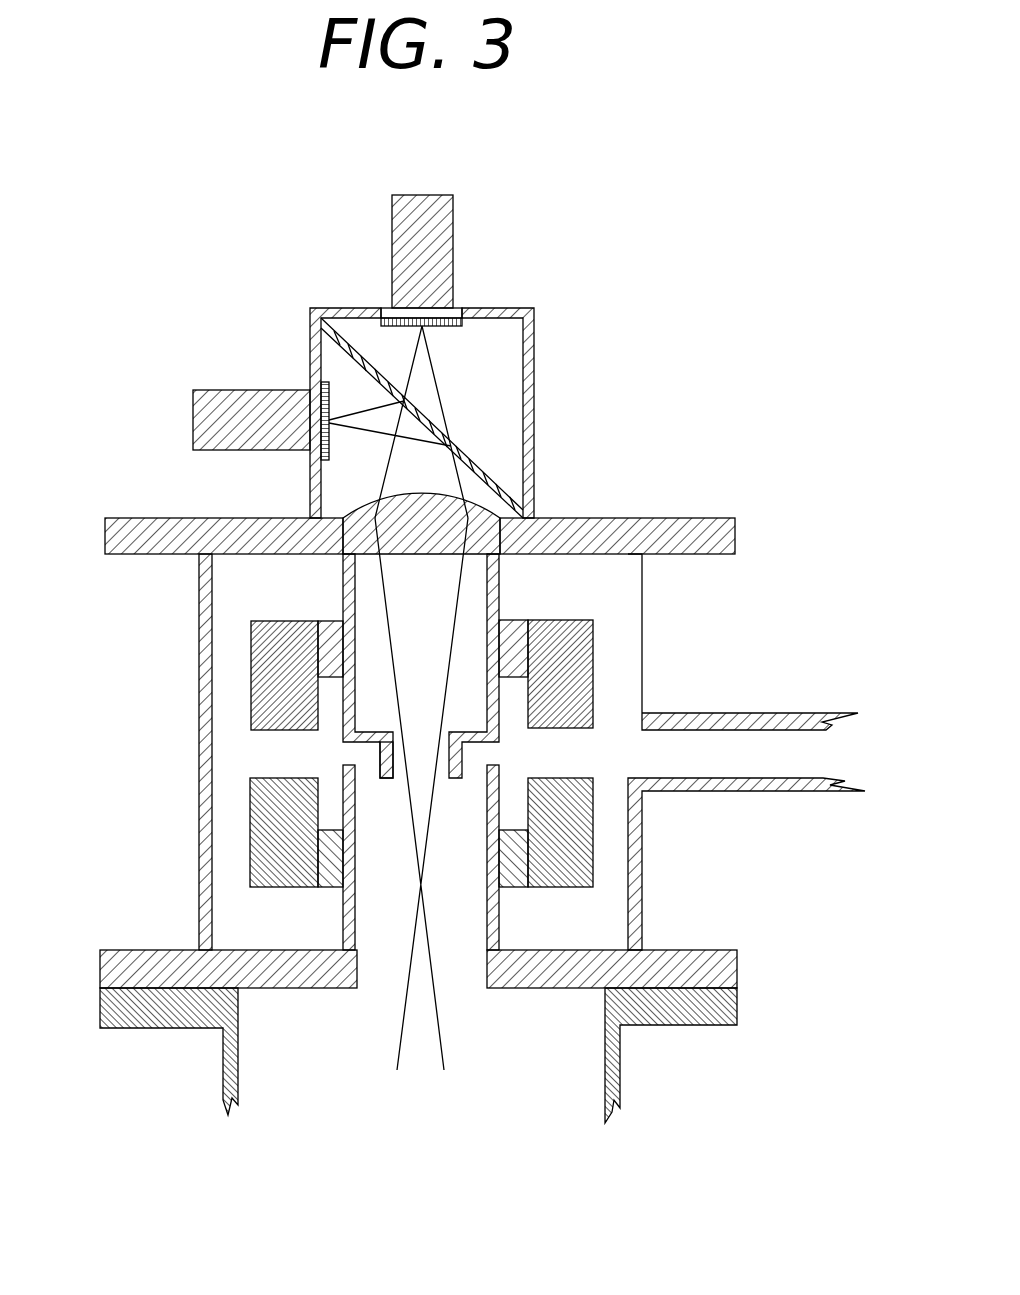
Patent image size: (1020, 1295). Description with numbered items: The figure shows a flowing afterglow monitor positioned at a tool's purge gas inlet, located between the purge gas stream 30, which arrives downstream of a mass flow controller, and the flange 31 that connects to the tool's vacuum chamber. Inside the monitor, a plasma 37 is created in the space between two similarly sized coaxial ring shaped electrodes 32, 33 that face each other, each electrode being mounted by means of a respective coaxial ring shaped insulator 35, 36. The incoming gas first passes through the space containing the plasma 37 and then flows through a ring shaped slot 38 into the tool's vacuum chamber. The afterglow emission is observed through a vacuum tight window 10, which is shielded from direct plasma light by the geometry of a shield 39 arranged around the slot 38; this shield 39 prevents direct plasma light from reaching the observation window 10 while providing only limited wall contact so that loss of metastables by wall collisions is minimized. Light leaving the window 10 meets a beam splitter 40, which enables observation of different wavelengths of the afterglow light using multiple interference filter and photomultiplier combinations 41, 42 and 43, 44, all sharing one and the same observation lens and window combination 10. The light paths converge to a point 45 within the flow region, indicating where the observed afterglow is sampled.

The vacuum tight window 10 is at (470, 507).
The purge gas stream 30 is at (820, 743).
The flange 31 is at (240, 1115).
The ring shaped electrode 32 is at (252, 645).
The ring shaped electrode 33 is at (252, 865).
The ring shaped insulator 35 is at (330, 623).
The ring shaped insulator 36 is at (330, 888).
The plasma 37 is at (262, 752).
The ring shaped slot 38 is at (476, 787).
The shield 39 is at (390, 732).
The beam splitter 40 is at (457, 440).
The interference filter 41 is at (463, 335).
The photo multiplier 42 is at (452, 238).
The interference filter 43 is at (330, 380).
The photo multiplier 44 is at (198, 392).
The focal point 45 is at (420, 881).